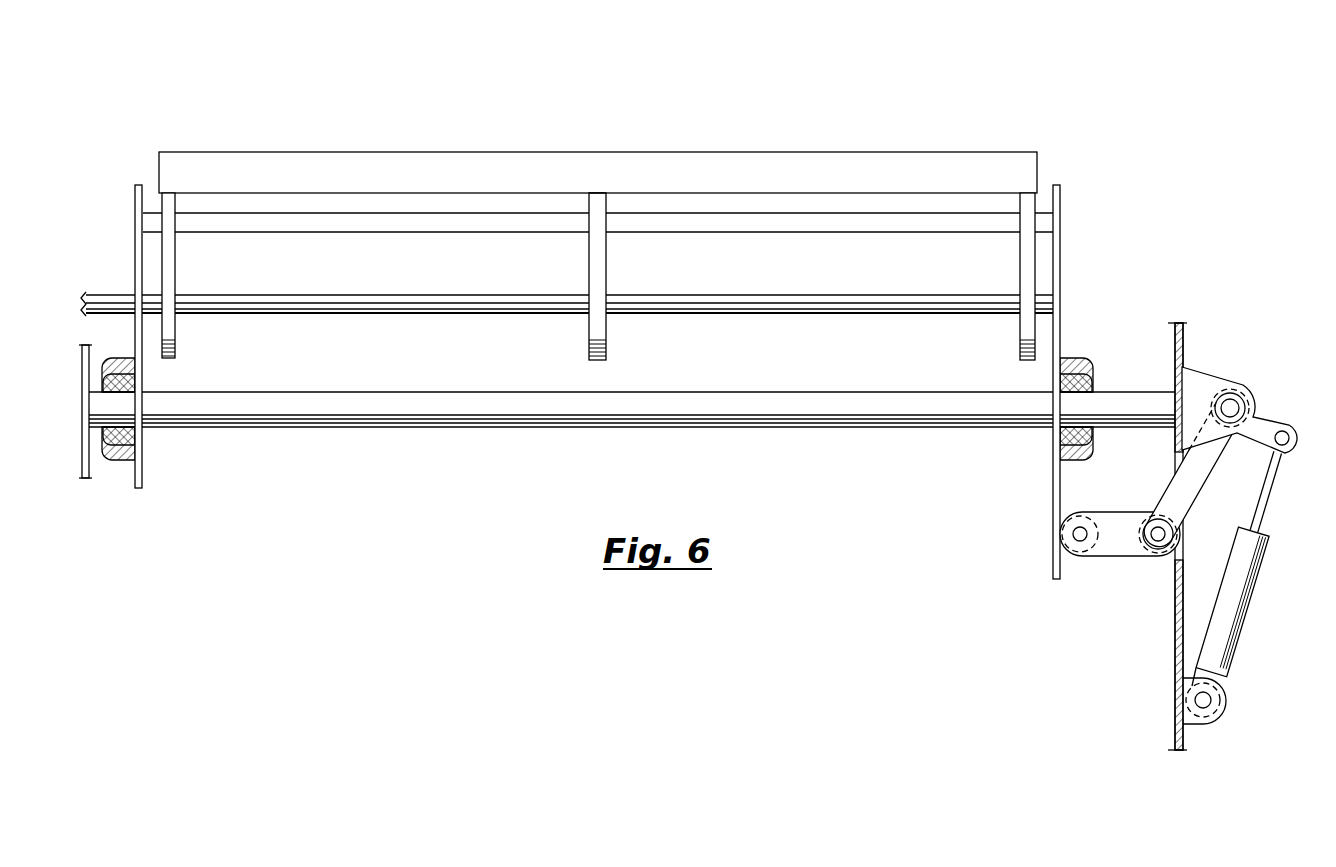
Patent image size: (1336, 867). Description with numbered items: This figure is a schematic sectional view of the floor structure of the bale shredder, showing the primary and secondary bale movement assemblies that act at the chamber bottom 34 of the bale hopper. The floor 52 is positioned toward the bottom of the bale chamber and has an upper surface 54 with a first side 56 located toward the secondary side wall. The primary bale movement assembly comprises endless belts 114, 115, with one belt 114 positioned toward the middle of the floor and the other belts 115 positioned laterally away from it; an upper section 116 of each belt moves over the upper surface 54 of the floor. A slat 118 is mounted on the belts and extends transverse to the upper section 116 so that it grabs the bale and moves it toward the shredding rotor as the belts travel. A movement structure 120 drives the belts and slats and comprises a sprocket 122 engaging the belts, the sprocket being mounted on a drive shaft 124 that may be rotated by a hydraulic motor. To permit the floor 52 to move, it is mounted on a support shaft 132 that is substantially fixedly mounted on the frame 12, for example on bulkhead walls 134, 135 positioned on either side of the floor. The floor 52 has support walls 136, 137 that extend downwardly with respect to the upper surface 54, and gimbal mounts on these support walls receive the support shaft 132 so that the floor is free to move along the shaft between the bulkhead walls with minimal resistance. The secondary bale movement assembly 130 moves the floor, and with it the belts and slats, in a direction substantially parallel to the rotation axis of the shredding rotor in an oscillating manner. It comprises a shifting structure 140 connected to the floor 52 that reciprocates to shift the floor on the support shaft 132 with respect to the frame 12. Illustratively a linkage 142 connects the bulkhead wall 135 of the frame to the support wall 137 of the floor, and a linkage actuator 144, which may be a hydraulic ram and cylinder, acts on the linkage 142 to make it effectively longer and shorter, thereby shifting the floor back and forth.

The frame 12 is at (137, 232).
The chamber bottom 34 is at (598, 183).
The floor 52 is at (876, 232).
The upper surface 54 is at (927, 213).
The first side 56 is at (395, 222).
The endless belt 114 is at (657, 238).
The endless belt 115 is at (1030, 253).
The upper section 116 is at (598, 200).
The slat 118 is at (752, 170).
The movement structure 120 is at (589, 416).
The sprocket 122 is at (163, 275).
The drive shaft 124 is at (272, 302).
The secondary bale movement assembly 130 is at (1185, 488).
The support shaft 132 is at (695, 405).
The bulkhead wall 134 is at (82, 460).
The bulkhead wall 135 is at (1184, 345).
The support wall 136 is at (138, 463).
The support wall 137 is at (1053, 490).
The shifting structure 140 is at (1185, 545).
The linkage 142 is at (1126, 540).
The linkage actuator 144 is at (1225, 610).